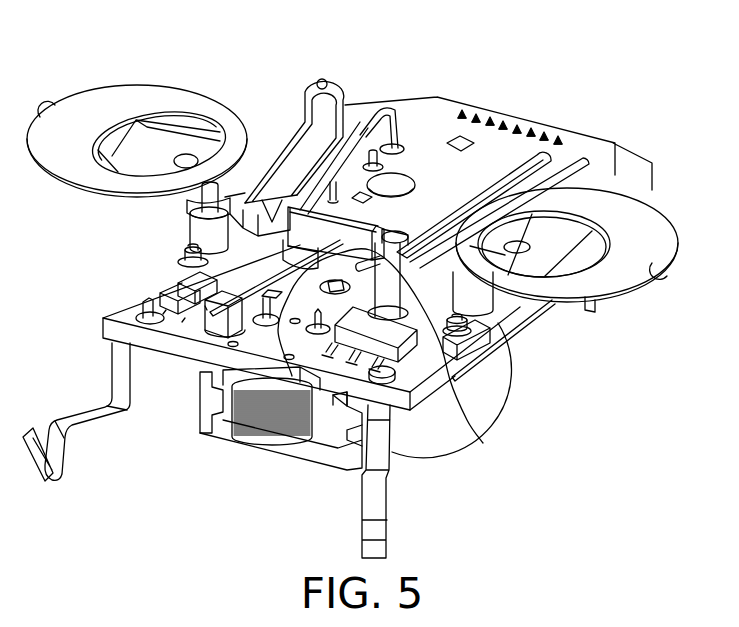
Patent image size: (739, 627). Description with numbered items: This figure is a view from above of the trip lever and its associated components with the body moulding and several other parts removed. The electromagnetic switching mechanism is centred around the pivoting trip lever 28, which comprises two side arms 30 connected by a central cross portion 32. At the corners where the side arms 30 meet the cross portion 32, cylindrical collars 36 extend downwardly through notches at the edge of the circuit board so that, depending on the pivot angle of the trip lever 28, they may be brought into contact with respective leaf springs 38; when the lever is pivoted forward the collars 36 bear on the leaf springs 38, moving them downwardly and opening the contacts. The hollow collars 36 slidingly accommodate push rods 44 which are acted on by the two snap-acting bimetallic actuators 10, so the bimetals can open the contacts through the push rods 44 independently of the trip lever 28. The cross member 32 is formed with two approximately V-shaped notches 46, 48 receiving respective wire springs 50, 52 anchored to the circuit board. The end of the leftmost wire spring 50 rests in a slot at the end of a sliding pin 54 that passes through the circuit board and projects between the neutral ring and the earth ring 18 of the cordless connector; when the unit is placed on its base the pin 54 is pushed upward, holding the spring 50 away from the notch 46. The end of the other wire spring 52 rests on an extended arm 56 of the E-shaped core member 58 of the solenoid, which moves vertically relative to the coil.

The snap-acting bimetallic actuator 10 is at (135, 92).
The earth ring 18 is at (495, 400).
The trip lever 28 is at (380, 212).
The side arm 30 is at (318, 145).
The central cross portion 32 is at (292, 377).
The cylindrical collar 36 is at (196, 232).
The leaf spring 38 is at (522, 315).
The push rod 44 is at (190, 192).
The V-shaped notch 46 is at (396, 226).
The V-shaped notch 48 is at (285, 194).
The wire spring 50 is at (530, 150).
The wire spring 52 is at (366, 122).
The sliding pin 54 is at (394, 354).
The extended arm 56 is at (226, 328).
The core member 58 is at (325, 462).